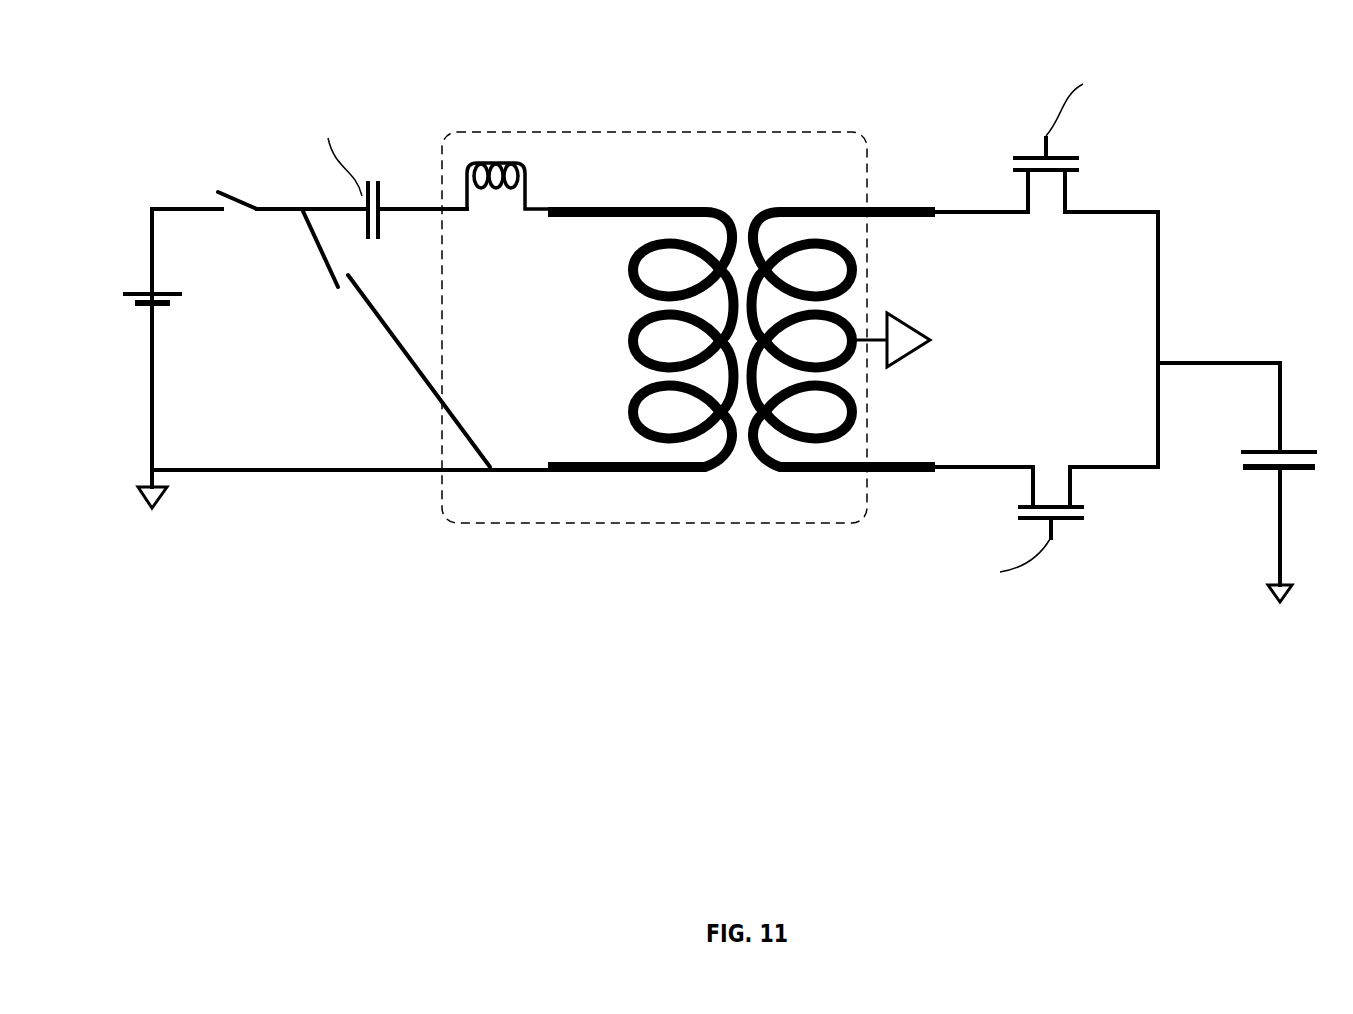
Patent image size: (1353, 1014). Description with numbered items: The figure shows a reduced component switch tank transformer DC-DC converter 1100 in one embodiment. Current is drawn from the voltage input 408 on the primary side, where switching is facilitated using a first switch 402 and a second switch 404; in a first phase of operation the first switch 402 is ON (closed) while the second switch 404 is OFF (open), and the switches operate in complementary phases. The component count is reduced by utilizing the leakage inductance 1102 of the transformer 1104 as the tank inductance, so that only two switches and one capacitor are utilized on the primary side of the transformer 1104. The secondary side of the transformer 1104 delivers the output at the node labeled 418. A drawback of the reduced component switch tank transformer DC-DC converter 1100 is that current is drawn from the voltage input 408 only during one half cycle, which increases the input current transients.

The reduced component switch tank transformer DC-DC converter 1100 is at (933, 85).
The first switch 402 is at (220, 190).
The second switch 404 is at (336, 276).
The voltage input 408 is at (202, 286).
The leakage inductance 1102 is at (497, 160).
The transformer 1104 is at (714, 490).
The output voltage Vout node 418 is at (1272, 336).